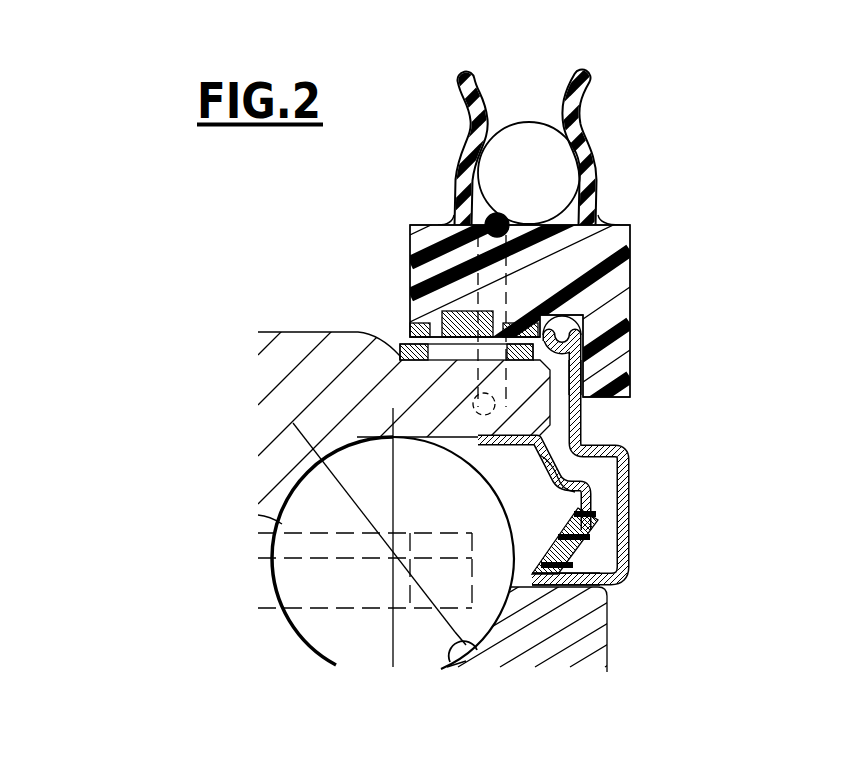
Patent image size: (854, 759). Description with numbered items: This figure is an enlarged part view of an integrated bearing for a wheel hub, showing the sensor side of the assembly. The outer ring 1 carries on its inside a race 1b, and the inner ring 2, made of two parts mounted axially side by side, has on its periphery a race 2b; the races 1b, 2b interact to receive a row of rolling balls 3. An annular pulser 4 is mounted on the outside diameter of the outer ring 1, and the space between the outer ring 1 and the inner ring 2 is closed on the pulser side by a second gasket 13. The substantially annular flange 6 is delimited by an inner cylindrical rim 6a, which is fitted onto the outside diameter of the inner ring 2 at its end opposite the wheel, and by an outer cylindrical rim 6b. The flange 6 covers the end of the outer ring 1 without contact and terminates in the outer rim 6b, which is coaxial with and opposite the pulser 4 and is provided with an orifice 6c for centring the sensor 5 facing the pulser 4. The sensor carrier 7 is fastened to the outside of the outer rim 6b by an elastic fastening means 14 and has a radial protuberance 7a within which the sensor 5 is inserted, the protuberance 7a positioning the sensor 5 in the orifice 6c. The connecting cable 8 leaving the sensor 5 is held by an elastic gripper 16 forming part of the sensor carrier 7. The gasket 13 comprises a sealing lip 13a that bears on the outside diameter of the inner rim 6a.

The outer ring 1 is at (264, 324).
The race 1b is at (340, 450).
The inner ring 2 is at (618, 637).
The race 2b is at (452, 660).
The rolling balls 3 is at (348, 637).
The pulser 4 is at (401, 350).
The sensor 5 is at (456, 283).
The flange 6 is at (596, 424).
The inner cylindrical rim 6a is at (612, 585).
The outer cylindrical rim 6b is at (600, 352).
The orifice 6c is at (600, 308).
The sensor carrier 7 is at (644, 244).
The radial protuberance 7a is at (409, 344).
The connecting cable 8 is at (528, 140).
The second gasket 13 is at (558, 476).
The sealing lip 13a is at (585, 545).
The elastic fastening means 14 is at (500, 214).
The elastic gripper 16 is at (578, 93).